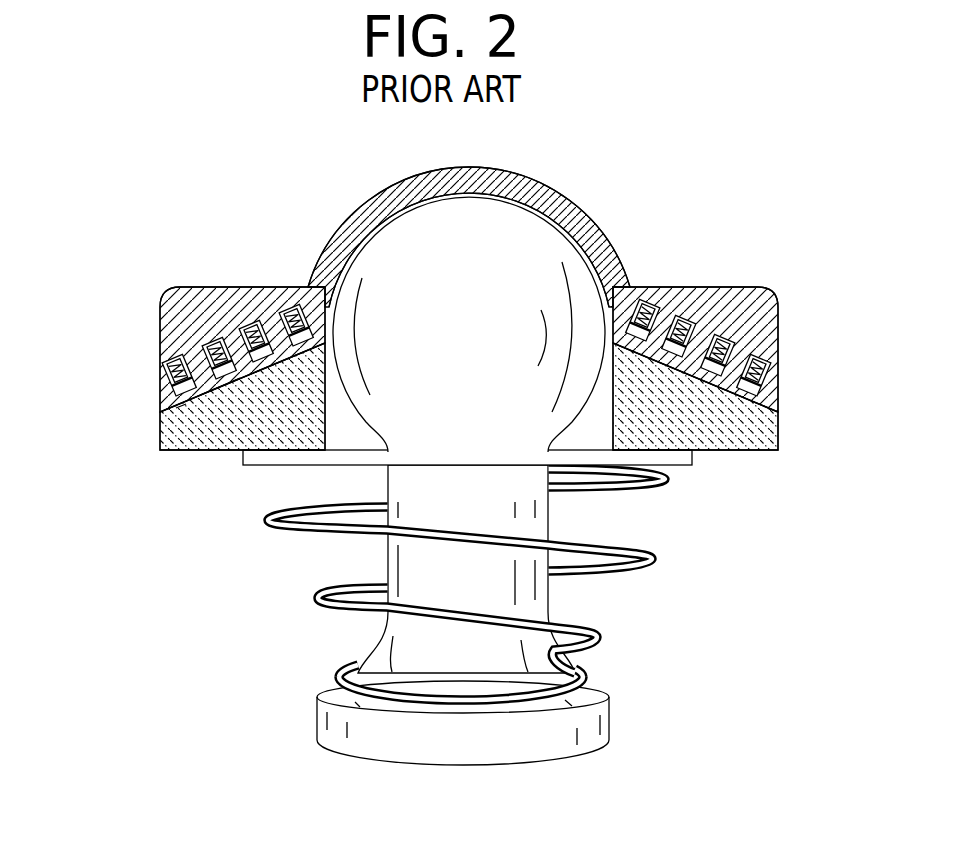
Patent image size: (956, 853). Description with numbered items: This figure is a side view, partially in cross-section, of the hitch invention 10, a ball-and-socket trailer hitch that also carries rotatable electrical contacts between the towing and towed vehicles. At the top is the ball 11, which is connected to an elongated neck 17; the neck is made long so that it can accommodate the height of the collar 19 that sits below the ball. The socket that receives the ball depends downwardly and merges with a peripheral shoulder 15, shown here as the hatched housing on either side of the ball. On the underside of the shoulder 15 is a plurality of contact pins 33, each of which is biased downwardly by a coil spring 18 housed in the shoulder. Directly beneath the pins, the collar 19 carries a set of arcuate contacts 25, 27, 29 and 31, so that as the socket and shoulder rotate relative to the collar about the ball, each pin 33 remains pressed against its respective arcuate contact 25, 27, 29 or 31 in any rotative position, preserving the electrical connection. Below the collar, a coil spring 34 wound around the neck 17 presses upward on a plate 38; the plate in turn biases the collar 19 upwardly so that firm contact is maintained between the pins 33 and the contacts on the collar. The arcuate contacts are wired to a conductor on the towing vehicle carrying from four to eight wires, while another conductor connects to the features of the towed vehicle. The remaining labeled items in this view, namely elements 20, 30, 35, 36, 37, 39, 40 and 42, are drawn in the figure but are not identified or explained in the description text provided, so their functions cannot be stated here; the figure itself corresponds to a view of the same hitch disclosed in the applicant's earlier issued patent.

The hitch invention 10 is at (256, 584).
The ball 11 is at (520, 222).
The peripheral shoulder 15 is at (188, 296).
The elongated neck 17 is at (530, 603).
The coil springs 18 is at (676, 322).
The collar 19 is at (157, 445).
The bearing interface 20 is at (172, 418).
The arcuate contact 25 is at (182, 404).
The arcuate contact 27 is at (221, 383).
The arcuate contact 29 is at (708, 348).
The housing wall 30 is at (757, 400).
The arcuate contact 31 is at (644, 305).
The contact pins 33 is at (183, 396).
The coil spring 34 is at (660, 562).
The spring plunger 35 is at (213, 352).
The base 36 is at (585, 683).
The spring plunger 37 is at (272, 328).
The plate 38 is at (258, 463).
The spring plunger 39 is at (312, 325).
The lower bearing portion 40 is at (722, 388).
The bearing interface 42 is at (685, 373).